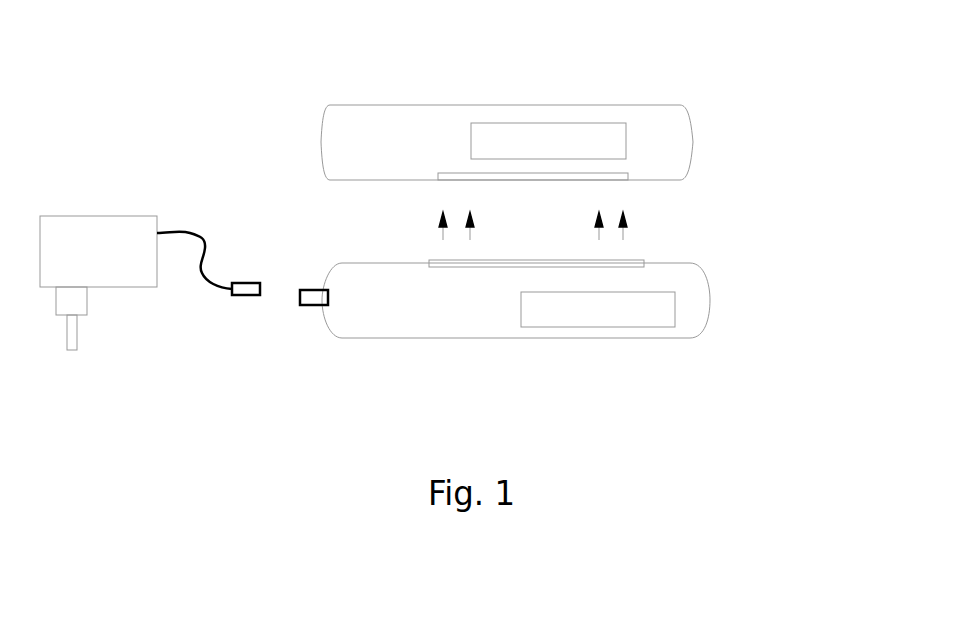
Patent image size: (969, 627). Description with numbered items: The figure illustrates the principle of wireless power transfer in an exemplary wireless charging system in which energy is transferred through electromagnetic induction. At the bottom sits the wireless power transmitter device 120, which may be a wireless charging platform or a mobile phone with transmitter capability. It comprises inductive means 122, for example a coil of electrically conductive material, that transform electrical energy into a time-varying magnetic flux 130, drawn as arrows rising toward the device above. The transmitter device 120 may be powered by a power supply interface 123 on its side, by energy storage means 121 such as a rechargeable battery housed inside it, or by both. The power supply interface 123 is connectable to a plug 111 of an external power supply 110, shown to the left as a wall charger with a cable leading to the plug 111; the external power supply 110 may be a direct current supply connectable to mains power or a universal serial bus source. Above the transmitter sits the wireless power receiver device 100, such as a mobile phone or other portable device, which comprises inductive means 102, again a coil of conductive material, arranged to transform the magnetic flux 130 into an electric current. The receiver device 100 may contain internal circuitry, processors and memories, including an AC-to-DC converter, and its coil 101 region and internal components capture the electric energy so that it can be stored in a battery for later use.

The wireless power receiver device 100 is at (368, 105).
The receiver coil 101 is at (565, 123).
The inductive means 102 is at (450, 172).
The external power supply 110 is at (128, 216).
The plug 111 is at (243, 300).
The wireless power transmitter device 120 is at (335, 340).
The energy storage means 121 is at (600, 328).
The inductive means 122 is at (473, 268).
The power supply interface 123 is at (303, 290).
The magnetic flux 130 is at (533, 218).